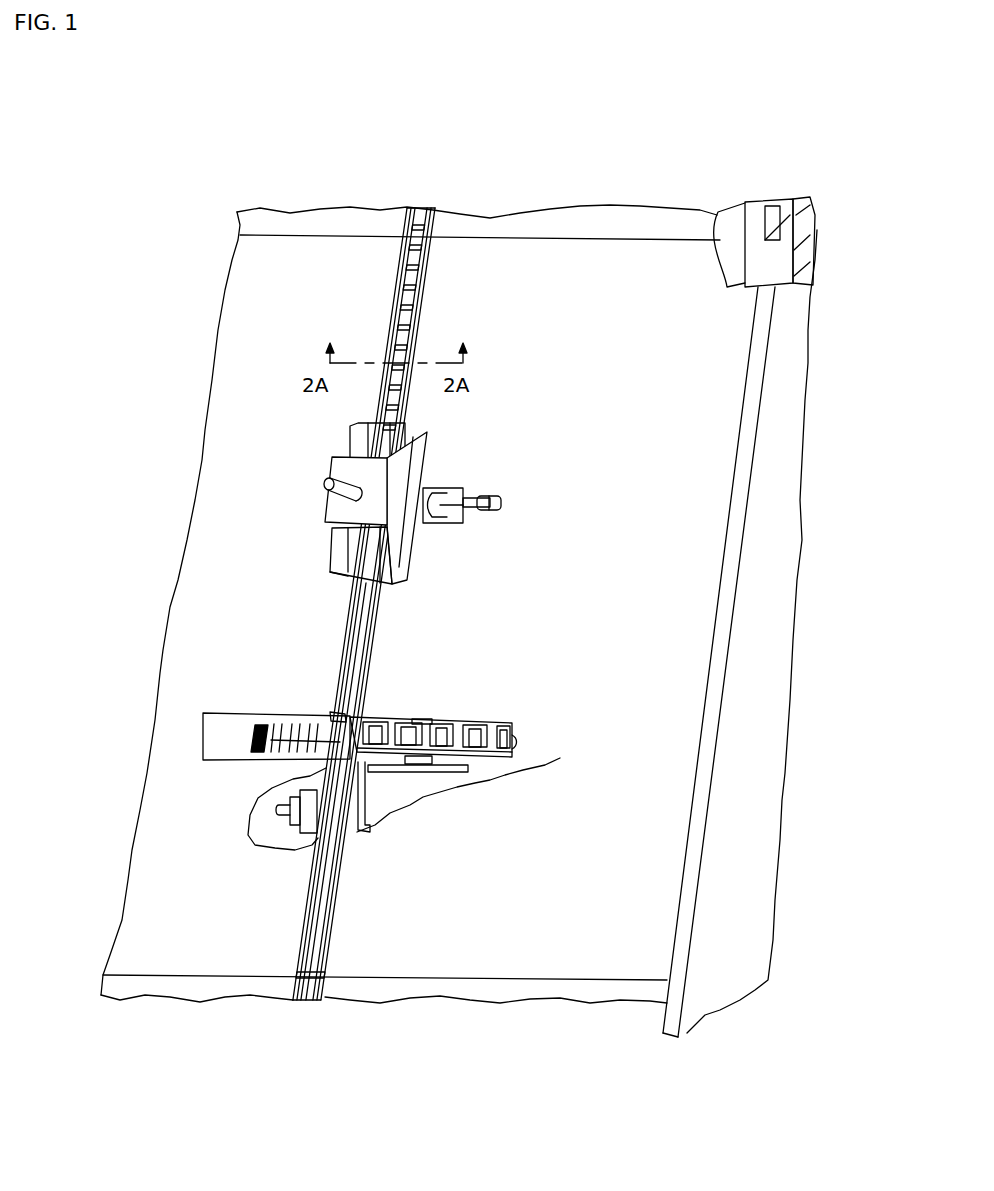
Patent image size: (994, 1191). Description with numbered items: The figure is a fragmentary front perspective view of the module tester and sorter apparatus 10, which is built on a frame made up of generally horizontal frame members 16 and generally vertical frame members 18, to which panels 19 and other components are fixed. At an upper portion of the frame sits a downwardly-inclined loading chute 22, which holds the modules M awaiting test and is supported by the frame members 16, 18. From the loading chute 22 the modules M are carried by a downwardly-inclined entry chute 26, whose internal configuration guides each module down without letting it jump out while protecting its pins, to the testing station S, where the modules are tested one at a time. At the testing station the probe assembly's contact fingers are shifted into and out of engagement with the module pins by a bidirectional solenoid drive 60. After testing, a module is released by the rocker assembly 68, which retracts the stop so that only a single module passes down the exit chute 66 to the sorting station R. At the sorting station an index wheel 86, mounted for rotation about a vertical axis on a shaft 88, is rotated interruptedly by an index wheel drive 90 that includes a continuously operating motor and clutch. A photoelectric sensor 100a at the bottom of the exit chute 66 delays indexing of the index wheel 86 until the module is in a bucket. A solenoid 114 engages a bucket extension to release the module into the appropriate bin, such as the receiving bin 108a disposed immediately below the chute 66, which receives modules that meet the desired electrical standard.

The module tester and sorter apparatus 10 is at (177, 248).
The horizontal frame members 16 is at (725, 218).
The vertical frame members 18 is at (763, 208).
The panels 19 is at (763, 873).
The loading chute 22 is at (437, 217).
The entry chute 26 is at (420, 312).
The modules M is at (413, 253).
The testing station S is at (462, 462).
The bidirectional solenoid drive 60 is at (503, 502).
The rocker assembly 68 is at (300, 522).
The exit chute 66 is at (385, 606).
The photoelectric sensor 100a is at (343, 720).
The sorting station R is at (376, 697).
The shaft 88 is at (387, 711).
The index wheel 86 is at (527, 745).
The solenoid 114 is at (300, 757).
The index wheel drive 90 is at (262, 843).
The module receiving bin 108a is at (325, 983).